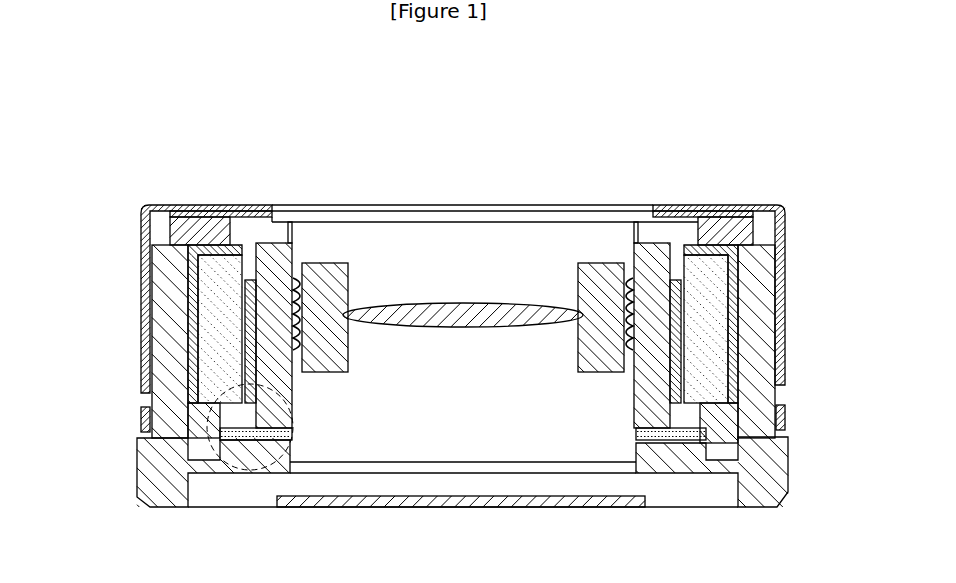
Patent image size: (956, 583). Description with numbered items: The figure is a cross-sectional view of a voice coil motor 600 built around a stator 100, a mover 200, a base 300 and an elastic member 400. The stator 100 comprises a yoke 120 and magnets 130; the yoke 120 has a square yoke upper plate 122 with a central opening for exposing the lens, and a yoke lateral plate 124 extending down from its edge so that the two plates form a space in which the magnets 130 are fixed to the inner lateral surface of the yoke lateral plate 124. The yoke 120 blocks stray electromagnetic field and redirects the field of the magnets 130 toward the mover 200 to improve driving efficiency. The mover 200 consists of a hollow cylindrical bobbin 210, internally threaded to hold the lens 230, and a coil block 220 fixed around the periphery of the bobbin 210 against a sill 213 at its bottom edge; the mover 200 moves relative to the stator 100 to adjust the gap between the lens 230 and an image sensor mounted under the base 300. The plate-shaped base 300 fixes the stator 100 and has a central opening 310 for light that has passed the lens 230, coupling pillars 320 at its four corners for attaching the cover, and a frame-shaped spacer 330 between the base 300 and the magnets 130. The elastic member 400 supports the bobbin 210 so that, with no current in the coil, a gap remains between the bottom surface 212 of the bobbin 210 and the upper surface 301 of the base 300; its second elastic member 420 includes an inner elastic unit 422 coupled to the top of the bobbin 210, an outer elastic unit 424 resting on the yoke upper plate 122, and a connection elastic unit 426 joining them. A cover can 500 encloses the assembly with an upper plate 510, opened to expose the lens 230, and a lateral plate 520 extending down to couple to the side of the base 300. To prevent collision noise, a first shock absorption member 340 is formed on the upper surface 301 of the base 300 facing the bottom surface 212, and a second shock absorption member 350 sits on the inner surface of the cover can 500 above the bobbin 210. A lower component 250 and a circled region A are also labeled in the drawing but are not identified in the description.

The stator 100 is at (186, 350).
The yoke 120 is at (386, 324).
The yoke upper plate 122 is at (192, 248).
The yoke lateral plate 124 is at (192, 318).
The magnet 130 is at (215, 380).
The mover 200 is at (420, 353).
The bobbin 210 is at (300, 208).
The bottom surface 212 is at (148, 445).
The sill 213 is at (778, 420).
The coil block 220 is at (268, 208).
The lens 230 is at (465, 305).
The image sensor board 250 is at (553, 503).
The base 300 is at (414, 502).
The upper surface 301 is at (252, 462).
The opening 310 is at (490, 486).
The coupling pillar 320 is at (768, 358).
The spacer 330 is at (220, 456).
The first shock absorption member 340 is at (692, 447).
The second shock absorption member 350 is at (745, 207).
The elastic member 400 is at (282, 446).
The second elastic member 420 is at (512, 182).
The inner elastic unit 422 is at (643, 208).
The outer elastic unit 424 is at (725, 198).
The connection elastic unit 426 is at (681, 208).
The cover can 500 is at (371, 254).
The upper plate 510 is at (408, 181).
The lateral plate 520 is at (124, 210).
The voice coil motor 600 is at (549, 163).
The region A is at (305, 465).